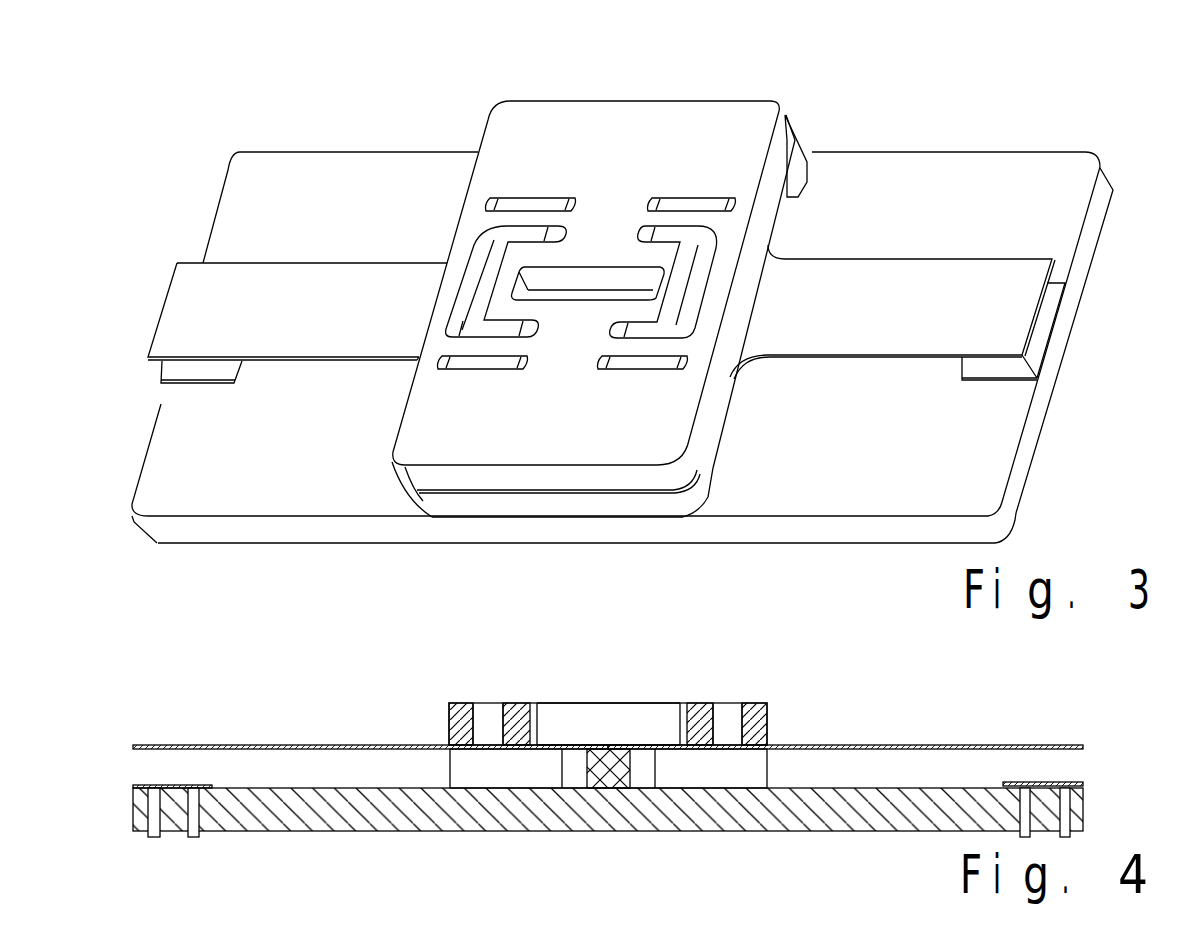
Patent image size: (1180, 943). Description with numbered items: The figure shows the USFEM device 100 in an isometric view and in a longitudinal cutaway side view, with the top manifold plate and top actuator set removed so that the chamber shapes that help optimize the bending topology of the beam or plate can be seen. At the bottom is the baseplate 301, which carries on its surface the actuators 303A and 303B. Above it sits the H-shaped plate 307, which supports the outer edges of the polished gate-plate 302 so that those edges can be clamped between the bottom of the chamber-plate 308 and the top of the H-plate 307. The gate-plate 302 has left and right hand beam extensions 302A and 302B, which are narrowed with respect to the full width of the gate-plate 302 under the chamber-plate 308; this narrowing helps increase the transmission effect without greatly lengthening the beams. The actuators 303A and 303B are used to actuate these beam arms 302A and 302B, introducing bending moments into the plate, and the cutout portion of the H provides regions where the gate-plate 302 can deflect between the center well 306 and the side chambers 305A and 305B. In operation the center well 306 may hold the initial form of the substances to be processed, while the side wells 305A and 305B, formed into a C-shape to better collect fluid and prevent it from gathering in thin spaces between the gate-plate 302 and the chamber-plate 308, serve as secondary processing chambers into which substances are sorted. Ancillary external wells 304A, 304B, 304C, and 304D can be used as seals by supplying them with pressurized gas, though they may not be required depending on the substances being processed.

In FIG. 3, the USFEM device 100 is at (1058, 415).
In FIG. 3, the baseplate 301 is at (280, 197).
In FIG. 4, the baseplate 301 is at (472, 817).
In FIG. 3, the gate-plate 302 is at (607, 321).
In FIG. 3, the left hand beam actuator 302A is at (290, 330).
In FIG. 4, the left hand beam actuator 302A is at (340, 752).
In FIG. 3, the right hand beam actuator 302B is at (923, 293).
In FIG. 4, the right hand beam actuator 302B is at (867, 745).
In FIG. 3, the actuator 303A is at (197, 380).
In FIG. 4, the actuator 303A is at (137, 787).
In FIG. 3, the actuator 303B is at (1017, 368).
In FIG. 4, the actuator 303B is at (1080, 783).
In FIG. 3, the ancillary external well 304A is at (530, 207).
In FIG. 3, the ancillary external well 304B is at (693, 200).
In FIG. 3, the ancillary external well 304C is at (667, 363).
In FIG. 3, the ancillary external well 304D is at (437, 365).
In FIG. 3, the side chamber 305A is at (547, 236).
In FIG. 4, the side chamber 305A is at (493, 727).
In FIG. 3, the side chamber 305B is at (667, 231).
In FIG. 4, the side chamber 305B is at (728, 716).
In FIG. 3, the center well 306 is at (598, 287).
In FIG. 4, the center well 306 is at (573, 733).
In FIG. 3, the H-shaped plate 307 is at (537, 327).
In FIG. 4, the H-shaped plate 307 is at (594, 763).
In FIG. 3, the chamber-plate 308 is at (470, 249).
In FIG. 4, the chamber-plate 308 is at (452, 728).